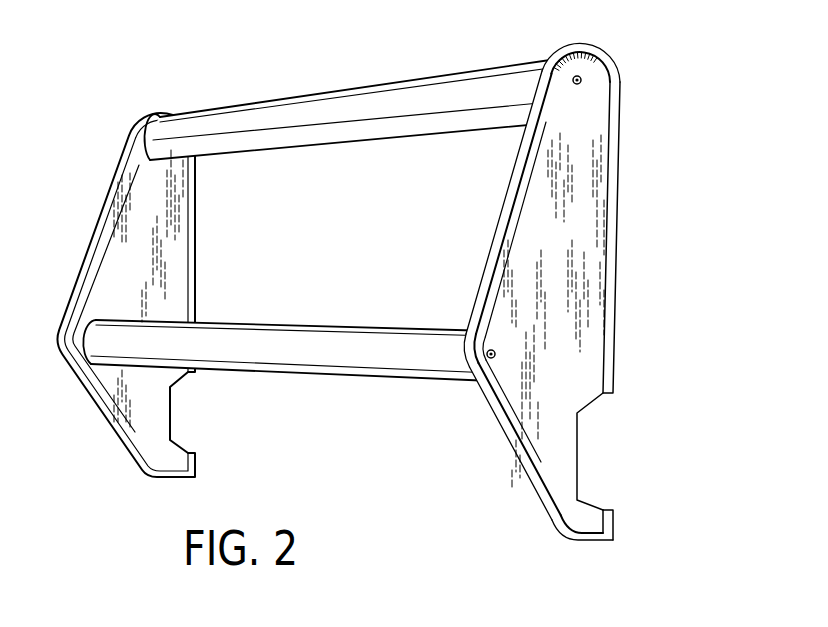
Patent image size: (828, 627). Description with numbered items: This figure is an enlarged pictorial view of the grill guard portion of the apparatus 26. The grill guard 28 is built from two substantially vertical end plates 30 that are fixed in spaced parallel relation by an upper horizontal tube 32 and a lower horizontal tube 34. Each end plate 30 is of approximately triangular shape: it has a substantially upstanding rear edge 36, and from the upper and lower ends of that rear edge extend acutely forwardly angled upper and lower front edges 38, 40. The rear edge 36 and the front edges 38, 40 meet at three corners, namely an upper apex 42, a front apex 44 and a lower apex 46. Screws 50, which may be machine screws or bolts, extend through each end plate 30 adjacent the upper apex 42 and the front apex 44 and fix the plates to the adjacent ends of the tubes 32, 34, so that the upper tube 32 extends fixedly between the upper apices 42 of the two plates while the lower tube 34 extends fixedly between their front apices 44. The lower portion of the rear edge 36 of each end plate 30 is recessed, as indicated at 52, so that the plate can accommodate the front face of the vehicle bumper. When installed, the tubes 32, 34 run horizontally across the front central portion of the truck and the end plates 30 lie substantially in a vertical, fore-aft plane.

The apparatus 26 is at (366, 319).
The grill guard 28 is at (366, 319).
The end plates 30 is at (583, 238).
The upper horizontal tube 32 is at (379, 108).
The lower horizontal tube 34 is at (317, 346).
The rear edge 36 is at (618, 222).
The upper front edge 38 is at (529, 152).
The lower front edge 40 is at (533, 468).
The upper apex 42 is at (587, 67).
The front apex 44 is at (475, 380).
The lower apex 46 is at (577, 521).
The screws 50 is at (582, 81).
The recess 52 is at (586, 500).